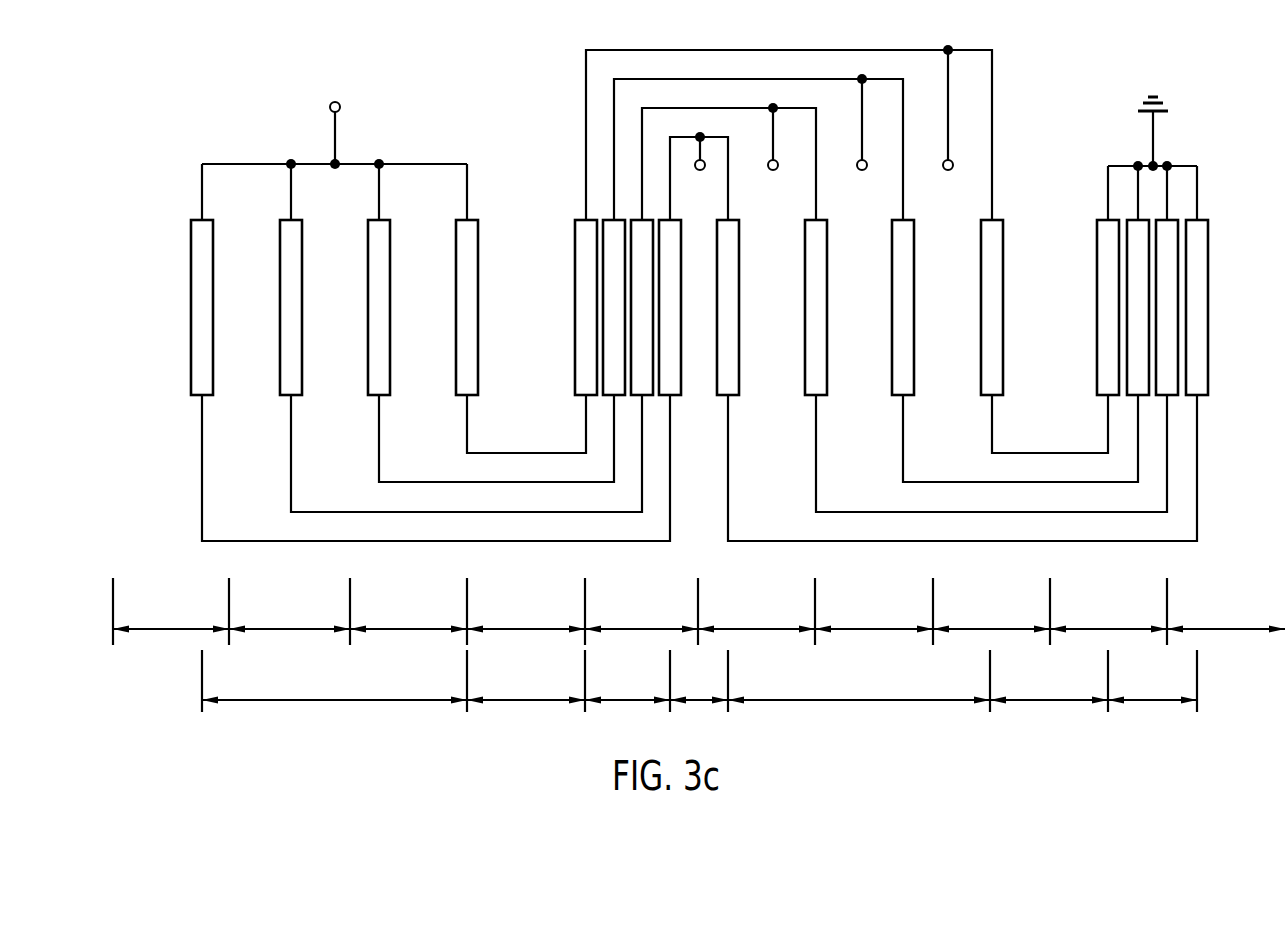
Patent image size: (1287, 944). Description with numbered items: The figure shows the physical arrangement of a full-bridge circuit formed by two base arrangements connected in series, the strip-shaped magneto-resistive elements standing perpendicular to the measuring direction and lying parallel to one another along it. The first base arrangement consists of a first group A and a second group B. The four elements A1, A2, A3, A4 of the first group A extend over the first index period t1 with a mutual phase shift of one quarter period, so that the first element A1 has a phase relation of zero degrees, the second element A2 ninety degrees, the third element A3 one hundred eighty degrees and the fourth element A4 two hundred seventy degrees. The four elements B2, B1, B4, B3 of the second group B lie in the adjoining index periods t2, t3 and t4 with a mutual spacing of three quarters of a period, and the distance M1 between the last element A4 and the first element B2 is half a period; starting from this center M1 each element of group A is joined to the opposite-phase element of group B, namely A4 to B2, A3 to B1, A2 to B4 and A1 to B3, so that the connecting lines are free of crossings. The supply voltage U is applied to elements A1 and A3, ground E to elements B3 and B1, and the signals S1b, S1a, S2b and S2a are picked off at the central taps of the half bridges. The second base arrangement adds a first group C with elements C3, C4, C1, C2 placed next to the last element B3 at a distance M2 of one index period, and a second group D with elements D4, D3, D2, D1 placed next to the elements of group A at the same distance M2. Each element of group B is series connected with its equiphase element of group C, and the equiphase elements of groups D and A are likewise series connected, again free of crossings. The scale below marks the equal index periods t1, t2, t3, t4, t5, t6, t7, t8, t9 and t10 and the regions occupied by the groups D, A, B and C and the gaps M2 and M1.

The magneto-resistive element D4 is at (202, 307).
The magneto-resistive element D3 is at (291, 307).
The magneto-resistive element D2 is at (379, 307).
The magneto-resistive element D1 is at (467, 307).
The first magneto-resistive element A1 is at (586, 307).
The second magneto-resistive element A2 is at (614, 307).
The third magneto-resistive element A3 is at (642, 307).
The fourth magneto-resistive element A4 is at (670, 307).
The magneto-resistive element B1 is at (816, 307).
The magneto-resistive element B2 is at (728, 307).
The magneto-resistive element B3 is at (992, 307).
The magneto-resistive element B4 is at (903, 307).
The magneto-resistive element C1 is at (1167, 307).
The magneto-resistive element C2 is at (1197, 307).
The magneto-resistive element C3 is at (1108, 307).
The magneto-resistive element C4 is at (1138, 307).
The supply voltage U is at (335, 88).
The ground E is at (1153, 82).
The signal S2a is at (700, 185).
The signal S1a is at (773, 185).
The signal S2b is at (862, 185).
The signal S1b is at (948, 185).
The first index period t1 is at (172, 614).
The index period t2 is at (290, 614).
The index period t3 is at (408, 614).
The index period t4 is at (527, 614).
The index period t5 is at (637, 614).
The index period t6 is at (760, 614).
The index period t7 is at (875, 614).
The index period t8 is at (998, 614).
The index period t9 is at (1112, 614).
The index period t10 is at (1230, 614).
The second group D is at (320, 682).
The distance M2 is at (786, 682).
The first group A is at (627, 682).
The distance M1 is at (703, 682).
The second group B is at (850, 682).
The first group C is at (1148, 682).